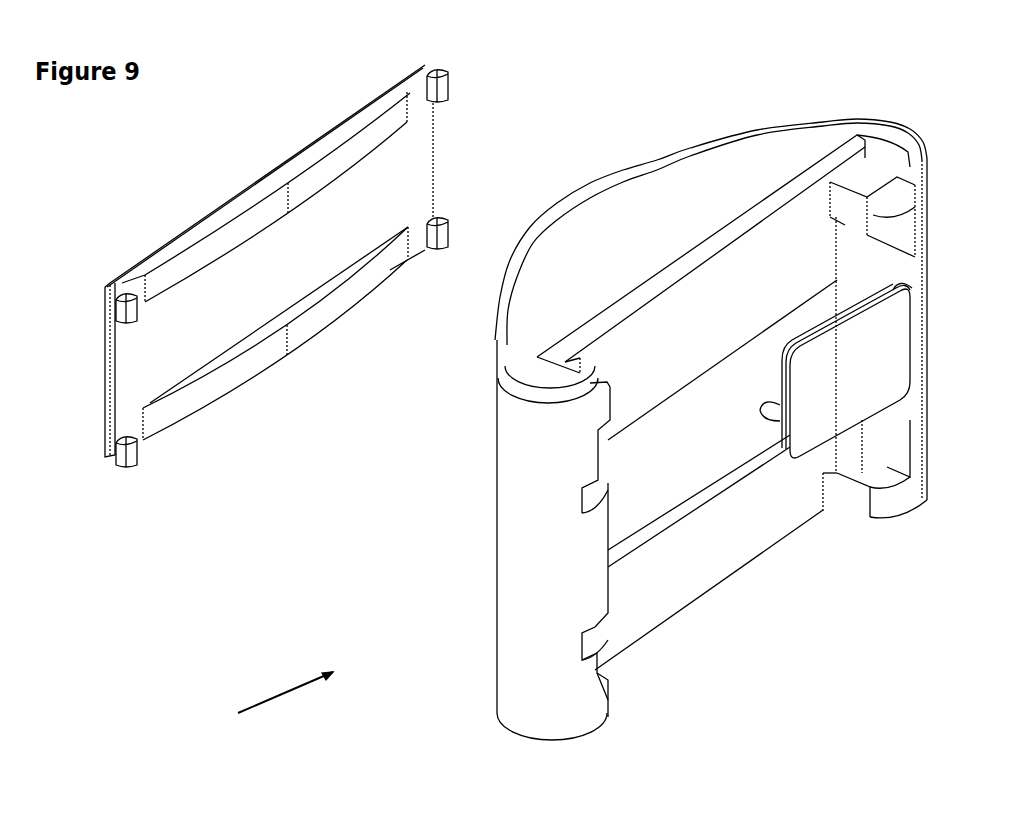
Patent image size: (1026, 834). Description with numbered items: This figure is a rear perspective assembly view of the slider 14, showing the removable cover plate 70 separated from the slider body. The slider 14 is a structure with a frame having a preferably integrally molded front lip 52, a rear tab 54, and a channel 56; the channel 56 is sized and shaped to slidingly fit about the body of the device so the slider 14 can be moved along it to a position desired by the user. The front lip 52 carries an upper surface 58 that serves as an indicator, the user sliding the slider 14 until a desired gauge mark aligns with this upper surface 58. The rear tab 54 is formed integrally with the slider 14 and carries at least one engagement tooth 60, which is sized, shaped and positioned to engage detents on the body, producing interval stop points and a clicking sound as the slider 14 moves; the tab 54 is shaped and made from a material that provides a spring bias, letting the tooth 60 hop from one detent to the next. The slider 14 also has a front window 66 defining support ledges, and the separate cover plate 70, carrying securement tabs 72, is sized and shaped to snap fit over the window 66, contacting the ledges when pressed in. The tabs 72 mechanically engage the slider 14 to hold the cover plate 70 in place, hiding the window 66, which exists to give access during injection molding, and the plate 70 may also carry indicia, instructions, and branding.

The slider 14 is at (270, 702).
The front lip 52 is at (497, 352).
The rear tab 54 is at (877, 381).
The channel 56 is at (872, 180).
The upper surface 58 is at (707, 173).
The engagement tooth 60 is at (771, 447).
The front window 66 is at (657, 488).
The cover plate 70 is at (218, 222).
The securement tabs 72 is at (443, 217).